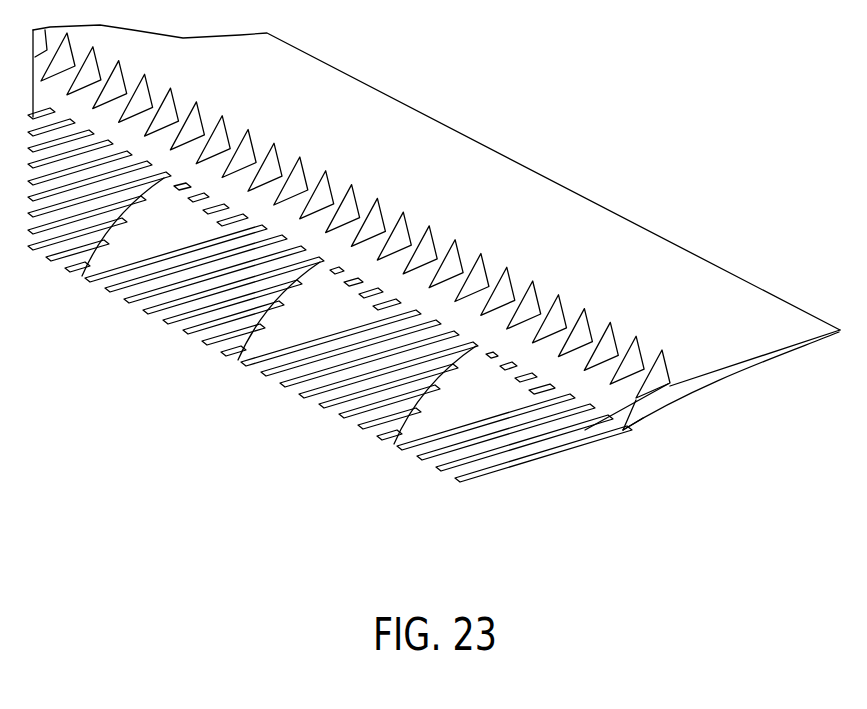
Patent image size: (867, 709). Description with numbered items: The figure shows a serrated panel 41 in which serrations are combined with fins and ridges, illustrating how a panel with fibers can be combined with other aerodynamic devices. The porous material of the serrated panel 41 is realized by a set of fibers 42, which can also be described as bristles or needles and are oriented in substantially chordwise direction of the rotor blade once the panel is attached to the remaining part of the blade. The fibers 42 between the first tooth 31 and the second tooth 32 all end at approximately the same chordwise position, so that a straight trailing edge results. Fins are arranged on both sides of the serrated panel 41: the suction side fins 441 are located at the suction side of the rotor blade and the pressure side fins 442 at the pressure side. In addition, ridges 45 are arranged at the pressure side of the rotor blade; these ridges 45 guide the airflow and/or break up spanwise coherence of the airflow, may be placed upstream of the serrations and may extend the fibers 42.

The serrated panel 41 is at (703, 166).
The fibers 42 is at (197, 347).
The first tooth 31 is at (443, 418).
The second tooth 32 is at (295, 335).
The ridges 45 is at (110, 213).
The suction side fins 441 is at (641, 418).
The pressure side fins 442 is at (675, 380).